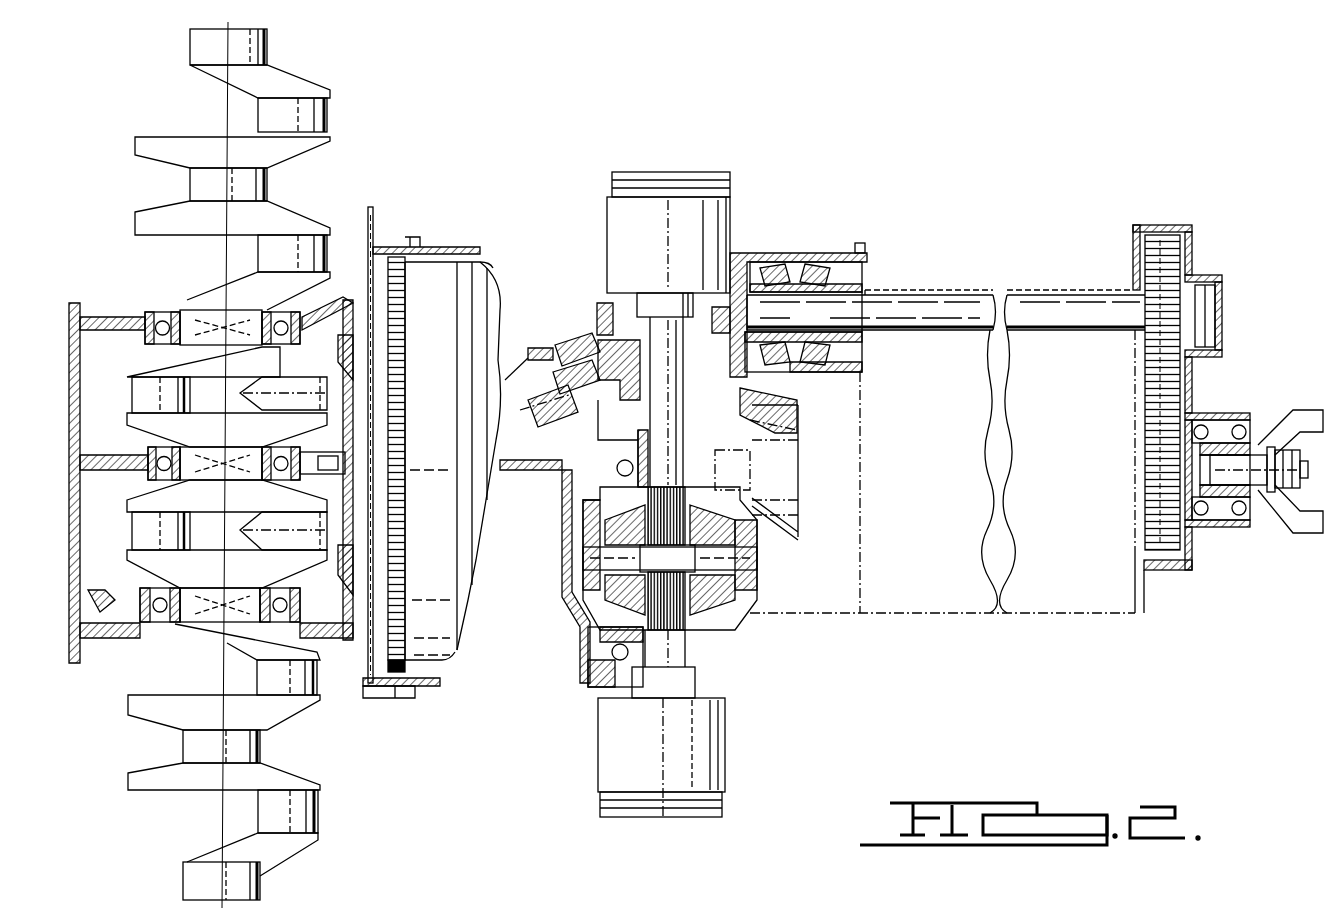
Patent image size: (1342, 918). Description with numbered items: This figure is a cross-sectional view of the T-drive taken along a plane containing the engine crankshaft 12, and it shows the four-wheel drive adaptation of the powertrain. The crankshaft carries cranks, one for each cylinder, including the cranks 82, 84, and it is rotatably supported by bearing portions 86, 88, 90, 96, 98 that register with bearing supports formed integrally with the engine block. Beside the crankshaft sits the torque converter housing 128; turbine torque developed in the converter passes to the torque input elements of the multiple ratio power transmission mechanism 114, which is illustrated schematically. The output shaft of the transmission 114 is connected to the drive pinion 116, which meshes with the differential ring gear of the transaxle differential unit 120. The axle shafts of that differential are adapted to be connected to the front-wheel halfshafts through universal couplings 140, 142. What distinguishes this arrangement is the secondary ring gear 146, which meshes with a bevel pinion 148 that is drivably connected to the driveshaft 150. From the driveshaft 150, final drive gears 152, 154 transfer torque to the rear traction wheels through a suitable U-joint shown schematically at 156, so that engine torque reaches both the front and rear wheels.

The crankshaft 12 is at (222, 667).
The crank 82 is at (270, 258).
The crank 84 is at (327, 115).
The bearing portion 86 is at (262, 880).
The bearing portion 88 is at (318, 816).
The bearing portion 90 is at (185, 746).
The bearing portion 96 is at (190, 185).
The bearing portion 98 is at (190, 44).
The multiple ratio power transmission mechanism 114 is at (903, 582).
The drive pinion 116 is at (858, 513).
The transaxle differential unit 120 is at (742, 612).
The torque converter housing 128 is at (478, 275).
The universal coupling 140 is at (605, 738).
The universal coupling 142 is at (612, 228).
The secondary ring gear 146 is at (780, 365).
The bevel pinion 148 is at (768, 262).
The driveshaft 150 is at (948, 298).
The final drive gear 152 is at (1190, 372).
The final drive gear 154 is at (1150, 514).
The U-joint 156 is at (1258, 445).